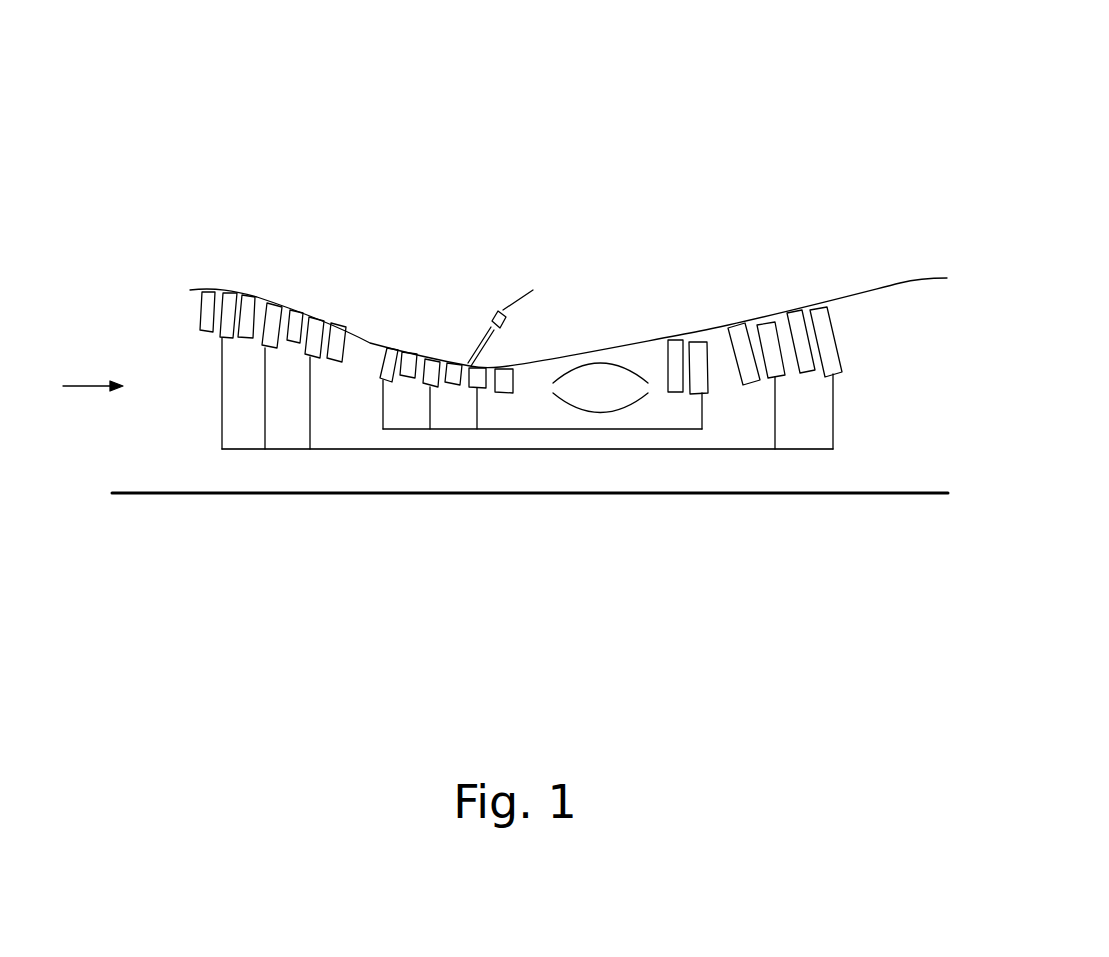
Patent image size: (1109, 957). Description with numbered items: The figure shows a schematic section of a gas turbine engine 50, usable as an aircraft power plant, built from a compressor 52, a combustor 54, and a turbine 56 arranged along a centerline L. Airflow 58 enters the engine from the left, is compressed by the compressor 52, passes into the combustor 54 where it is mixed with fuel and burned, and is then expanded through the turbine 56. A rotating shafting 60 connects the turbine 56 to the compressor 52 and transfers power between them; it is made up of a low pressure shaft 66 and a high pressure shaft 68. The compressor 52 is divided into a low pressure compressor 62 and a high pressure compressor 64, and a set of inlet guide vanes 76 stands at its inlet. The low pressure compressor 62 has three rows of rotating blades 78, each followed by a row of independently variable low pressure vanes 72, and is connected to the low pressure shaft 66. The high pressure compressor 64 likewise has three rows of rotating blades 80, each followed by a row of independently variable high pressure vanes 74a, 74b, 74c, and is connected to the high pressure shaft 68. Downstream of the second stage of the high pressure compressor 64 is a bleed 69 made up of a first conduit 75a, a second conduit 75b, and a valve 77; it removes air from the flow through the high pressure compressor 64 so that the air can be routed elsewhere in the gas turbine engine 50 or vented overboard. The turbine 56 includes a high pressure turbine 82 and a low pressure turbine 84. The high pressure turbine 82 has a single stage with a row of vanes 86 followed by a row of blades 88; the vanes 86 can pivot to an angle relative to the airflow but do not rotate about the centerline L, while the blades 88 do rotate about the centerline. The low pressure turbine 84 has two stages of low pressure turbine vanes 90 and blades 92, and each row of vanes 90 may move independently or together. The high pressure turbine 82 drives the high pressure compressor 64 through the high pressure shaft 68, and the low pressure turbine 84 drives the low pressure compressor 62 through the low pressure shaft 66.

The gas turbine engine 50 is at (282, 602).
The compressor 52 is at (373, 233).
The combustor 54 is at (608, 363).
The turbine 56 is at (803, 117).
The airflow 58 is at (83, 386).
The rotating shafting 60 is at (538, 465).
The low pressure compressor 62 is at (303, 233).
The high pressure compressor 64 is at (482, 205).
The low pressure shaft 66 is at (381, 450).
The high pressure shaft 68 is at (637, 430).
The bleed 69 is at (578, 223).
The low pressure vanes 72 is at (255, 289).
The high pressure vane 74a is at (412, 350).
The high pressure vane 74b is at (452, 362).
The high pressure vane 74c is at (508, 367).
The first conduit 75a is at (470, 362).
The second conduit 75b is at (505, 313).
The inlet guide vanes 76 is at (207, 289).
The valve 77 is at (509, 322).
The rotating blades 78 is at (220, 338).
The rotating blades 80 is at (380, 380).
The high pressure turbine 82 is at (725, 247).
The low pressure turbine 84 is at (812, 202).
The vanes 86 is at (678, 338).
The blades 88 is at (708, 394).
The low pressure turbine vanes 90 is at (738, 326).
The blades 92 is at (782, 379).
The centerline L is at (773, 495).